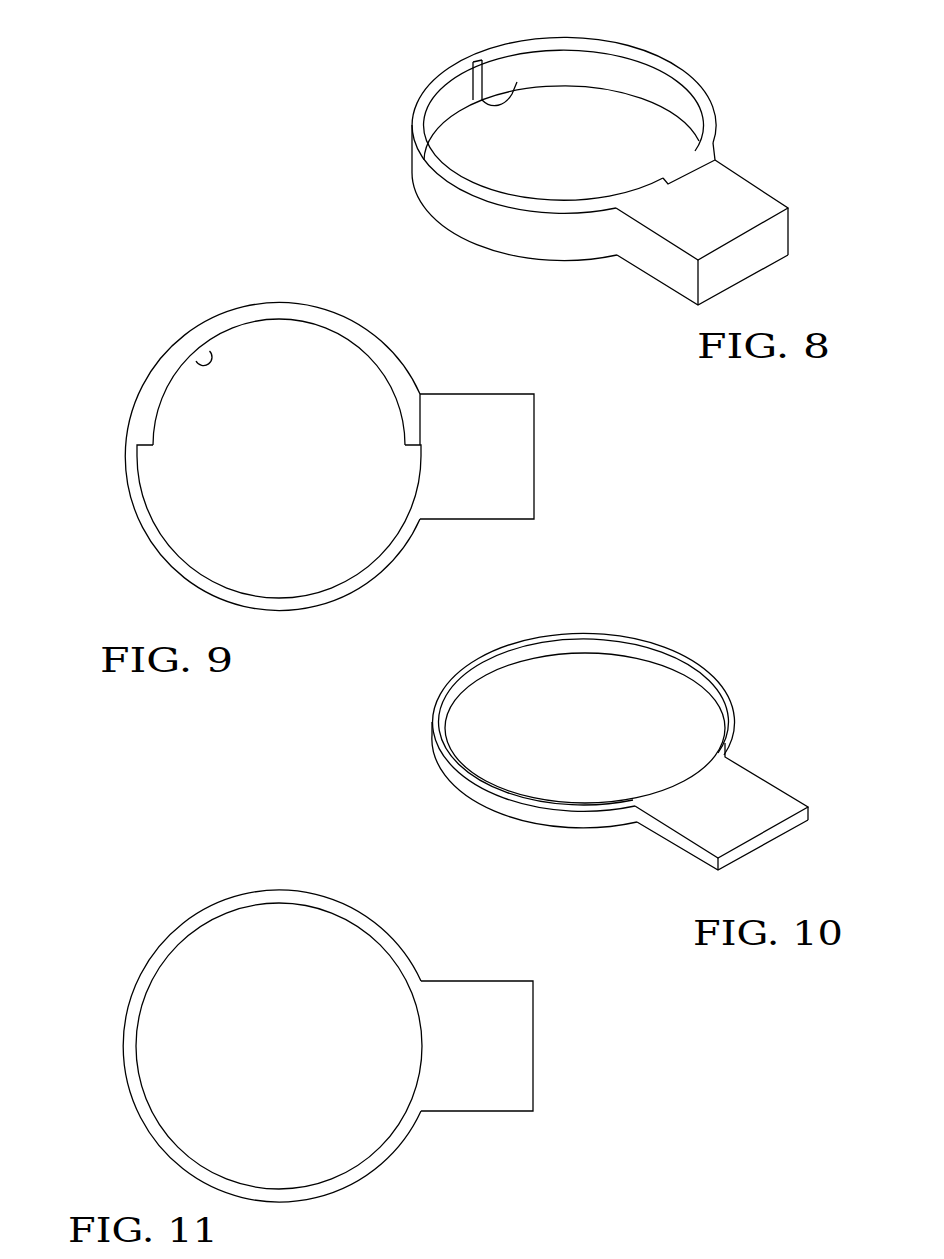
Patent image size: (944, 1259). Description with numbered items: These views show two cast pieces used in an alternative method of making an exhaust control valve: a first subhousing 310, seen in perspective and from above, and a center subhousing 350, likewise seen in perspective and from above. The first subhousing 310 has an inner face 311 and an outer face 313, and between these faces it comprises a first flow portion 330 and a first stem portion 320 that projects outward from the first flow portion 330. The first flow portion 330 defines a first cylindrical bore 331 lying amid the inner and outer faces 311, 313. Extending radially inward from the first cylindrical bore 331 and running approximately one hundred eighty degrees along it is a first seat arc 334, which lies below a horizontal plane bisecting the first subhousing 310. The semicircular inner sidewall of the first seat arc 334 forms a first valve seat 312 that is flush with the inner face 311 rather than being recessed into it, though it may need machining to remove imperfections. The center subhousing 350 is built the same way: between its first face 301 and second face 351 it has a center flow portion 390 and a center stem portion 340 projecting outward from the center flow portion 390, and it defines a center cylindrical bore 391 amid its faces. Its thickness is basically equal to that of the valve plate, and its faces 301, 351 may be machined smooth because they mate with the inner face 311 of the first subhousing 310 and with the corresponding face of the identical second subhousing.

In FIG. 8, the first subhousing 310 is at (755, 47).
In FIG. 9, the first subhousing 310 is at (180, 294).
In FIG. 8, the inner face 311 is at (655, 60).
In FIG. 9, the inner face 311 is at (385, 360).
In FIG. 8, the first valve seat 312 is at (483, 58).
In FIG. 9, the first valve seat 312 is at (147, 437).
In FIG. 8, the outer face 313 is at (430, 216).
In FIG. 8, the first stem portion 320 is at (725, 272).
In FIG. 9, the first stem portion 320 is at (537, 490).
In FIG. 8, the first flow portion 330 is at (412, 137).
In FIG. 9, the first flow portion 330 is at (135, 524).
In FIG. 8, the first cylindrical bore 331 is at (615, 150).
In FIG. 9, the first cylindrical bore 331 is at (306, 478).
In FIG. 8, the first seat arc 334 is at (485, 103).
In FIG. 9, the first seat arc 334 is at (196, 362).
In FIG. 10, the center subhousing 350 is at (765, 631).
In FIG. 11, the center subhousing 350 is at (147, 901).
In FIG. 10, the first face 301 is at (650, 645).
In FIG. 11, the first face 301 is at (385, 946).
In FIG. 10, the second face 351 is at (455, 787).
In FIG. 10, the center flow portion 390 is at (433, 706).
In FIG. 11, the center flow portion 390 is at (158, 1145).
In FIG. 10, the center cylindrical bore 391 is at (682, 737).
In FIG. 11, the center cylindrical bore 391 is at (305, 1066).
In FIG. 10, the center stem portion 340 is at (735, 854).
In FIG. 11, the center stem portion 340 is at (535, 1033).